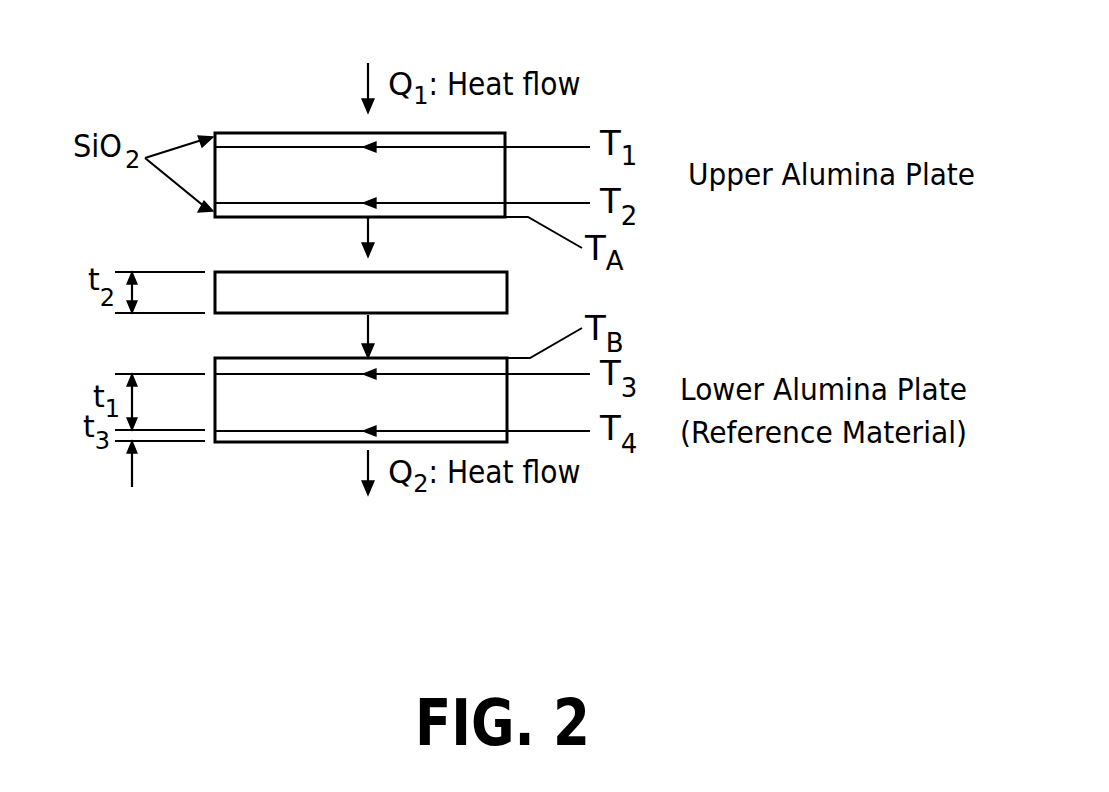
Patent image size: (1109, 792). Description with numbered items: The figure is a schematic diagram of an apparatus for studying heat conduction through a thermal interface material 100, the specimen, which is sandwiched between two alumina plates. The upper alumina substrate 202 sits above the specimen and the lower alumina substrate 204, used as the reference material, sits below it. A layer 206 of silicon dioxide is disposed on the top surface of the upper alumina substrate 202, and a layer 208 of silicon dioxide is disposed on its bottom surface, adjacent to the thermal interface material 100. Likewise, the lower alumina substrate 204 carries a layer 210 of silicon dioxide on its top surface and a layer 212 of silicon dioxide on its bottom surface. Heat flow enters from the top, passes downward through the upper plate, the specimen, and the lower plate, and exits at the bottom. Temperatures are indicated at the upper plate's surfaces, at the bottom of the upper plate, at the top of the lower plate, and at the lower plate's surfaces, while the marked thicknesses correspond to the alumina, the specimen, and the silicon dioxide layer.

The thermal interface material 100 is at (507, 293).
The alumina substrate 202 is at (278, 188).
The alumina substrate 204 is at (278, 415).
The layer of silicon dioxide 206 is at (249, 138).
The layer of silicon dioxide 208 is at (237, 218).
The layer of silicon dioxide 210 is at (230, 358).
The layer of silicon dioxide 212 is at (242, 442).